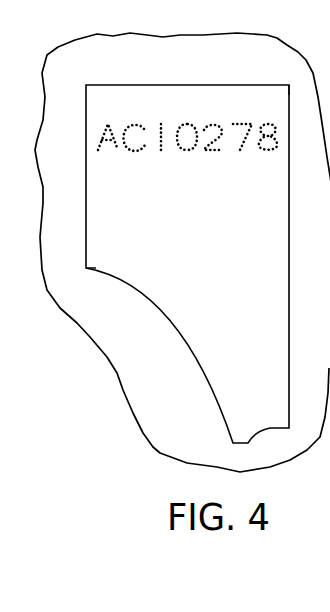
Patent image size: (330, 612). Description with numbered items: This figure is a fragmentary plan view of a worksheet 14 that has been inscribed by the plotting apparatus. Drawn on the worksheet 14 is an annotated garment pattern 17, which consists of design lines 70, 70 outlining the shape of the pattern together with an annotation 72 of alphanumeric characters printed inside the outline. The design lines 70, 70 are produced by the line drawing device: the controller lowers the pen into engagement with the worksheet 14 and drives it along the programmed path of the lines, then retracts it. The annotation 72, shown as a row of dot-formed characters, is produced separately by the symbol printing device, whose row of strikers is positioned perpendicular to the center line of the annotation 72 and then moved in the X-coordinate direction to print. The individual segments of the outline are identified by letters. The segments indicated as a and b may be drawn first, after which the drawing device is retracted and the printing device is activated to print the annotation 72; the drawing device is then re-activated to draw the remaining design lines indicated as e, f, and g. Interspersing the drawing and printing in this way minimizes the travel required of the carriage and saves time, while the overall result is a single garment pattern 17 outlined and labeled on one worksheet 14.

The worksheet 14 is at (186, 450).
The annotated garment pattern 17 is at (157, 338).
The annotation 72 is at (171, 160).
The design lines 70 is at (288, 108).
The design line a is at (177, 323).
The design line b is at (85, 202).
The design line e is at (192, 85).
The design line f is at (288, 289).
The design line g is at (267, 427).